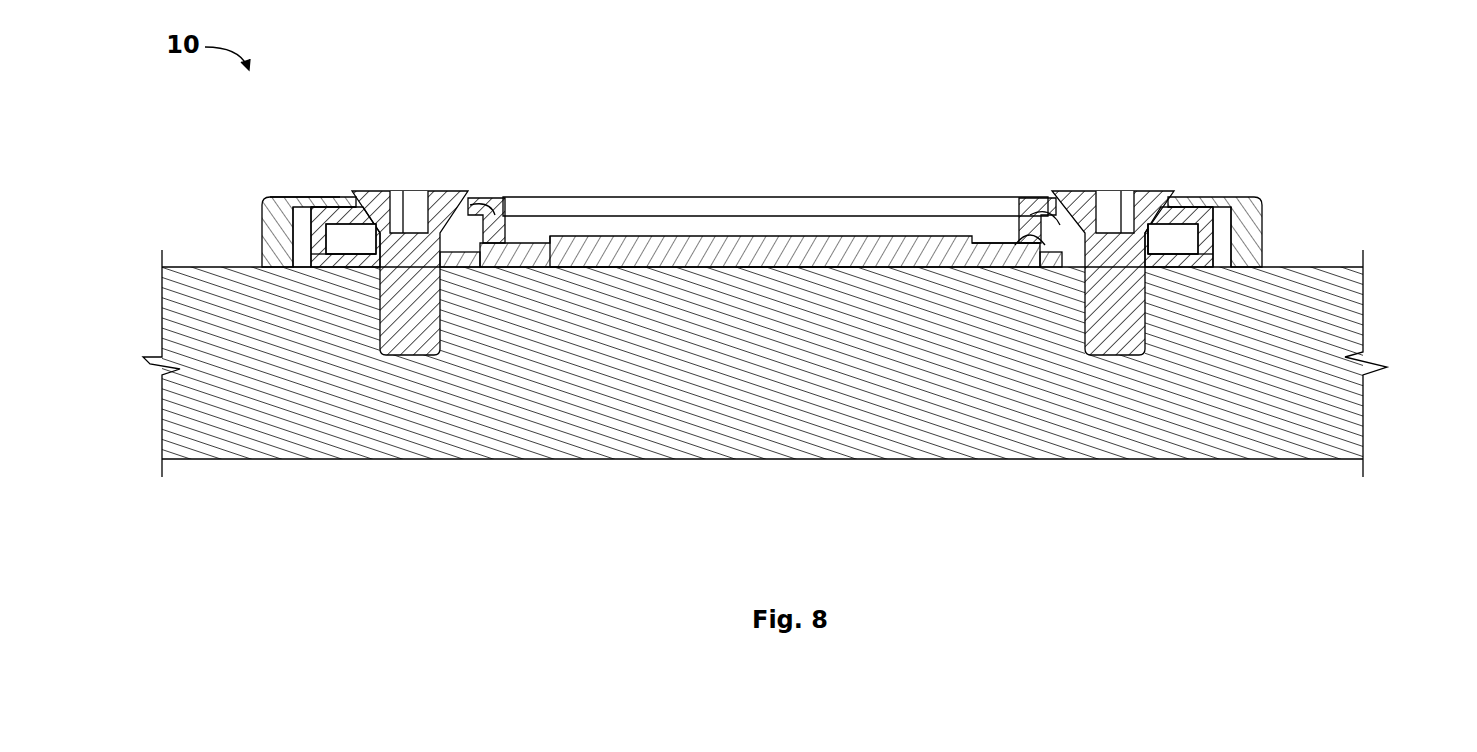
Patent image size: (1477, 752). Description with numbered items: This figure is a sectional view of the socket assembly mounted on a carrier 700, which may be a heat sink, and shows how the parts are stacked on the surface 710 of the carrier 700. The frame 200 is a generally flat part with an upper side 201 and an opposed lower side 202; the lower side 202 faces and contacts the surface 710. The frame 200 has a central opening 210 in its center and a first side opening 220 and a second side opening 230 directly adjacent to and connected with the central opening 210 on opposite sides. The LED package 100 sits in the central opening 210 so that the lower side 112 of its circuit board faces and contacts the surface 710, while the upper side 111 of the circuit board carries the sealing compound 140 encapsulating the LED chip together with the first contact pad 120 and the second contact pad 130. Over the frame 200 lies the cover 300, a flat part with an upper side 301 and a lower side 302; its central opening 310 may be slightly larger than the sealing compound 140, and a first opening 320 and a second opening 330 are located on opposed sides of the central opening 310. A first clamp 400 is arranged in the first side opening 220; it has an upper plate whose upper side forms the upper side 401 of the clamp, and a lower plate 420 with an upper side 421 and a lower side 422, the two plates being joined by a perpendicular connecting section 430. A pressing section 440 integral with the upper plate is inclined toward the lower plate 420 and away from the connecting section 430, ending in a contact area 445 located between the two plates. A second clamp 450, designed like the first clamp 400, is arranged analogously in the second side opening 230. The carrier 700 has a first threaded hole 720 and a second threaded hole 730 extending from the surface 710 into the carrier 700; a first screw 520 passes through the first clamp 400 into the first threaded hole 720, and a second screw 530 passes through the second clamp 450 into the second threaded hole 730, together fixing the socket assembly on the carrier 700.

The carrier 700 is at (390, 437).
The second threaded hole 730 is at (422, 357).
The first threaded hole 720 is at (1100, 355).
The second screw 530 is at (392, 322).
The first screw 520 is at (1130, 355).
The frame 200 is at (278, 240).
The upper side 201 is at (300, 197).
The lower side 202 is at (302, 262).
The upper side 301 is at (312, 207).
The cover 300 is at (320, 207).
The lower side 302 is at (276, 262).
The second opening 330 is at (347, 207).
The second side opening 230 is at (315, 262).
The second clamp 450 is at (347, 262).
The first side opening 220 is at (1208, 228).
The first clamp 400 is at (1177, 213).
The first opening 320 is at (1193, 204).
The upper side 401 is at (1196, 200).
The connecting section 430 is at (1205, 262).
The upper side 421 is at (1190, 262).
The lower plate 420 is at (1177, 262).
The lower side 422 is at (1168, 268).
The LED package 100 is at (686, 256).
The surface 710 is at (582, 262).
The lower side 112 is at (592, 268).
The sealing compound 140 is at (805, 255).
The first contact pad 120 is at (988, 262).
The upper side 111 is at (776, 232).
The second contact pad 130 is at (528, 268).
The central opening 310 is at (495, 205).
The pressing section 440 is at (1017, 233).
The contact area 445 is at (1020, 242).
The central opening 210 is at (1035, 240).